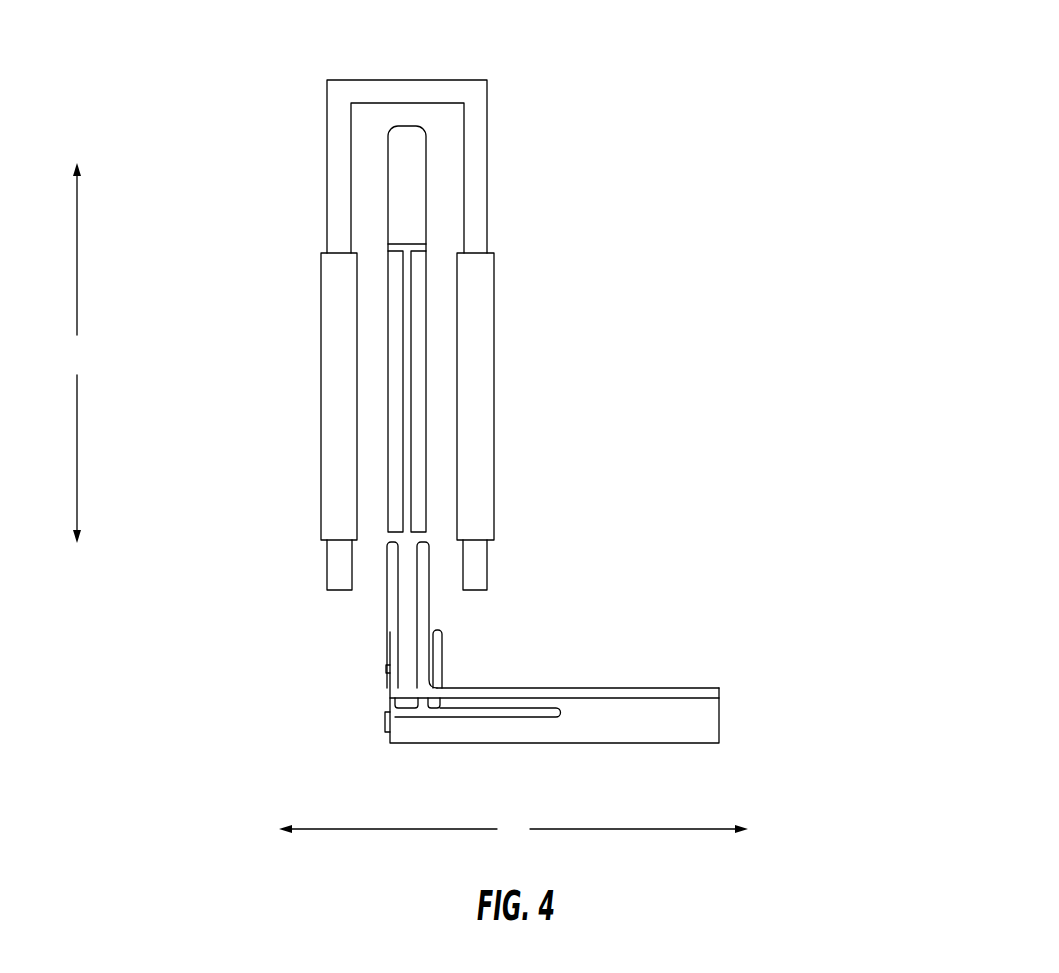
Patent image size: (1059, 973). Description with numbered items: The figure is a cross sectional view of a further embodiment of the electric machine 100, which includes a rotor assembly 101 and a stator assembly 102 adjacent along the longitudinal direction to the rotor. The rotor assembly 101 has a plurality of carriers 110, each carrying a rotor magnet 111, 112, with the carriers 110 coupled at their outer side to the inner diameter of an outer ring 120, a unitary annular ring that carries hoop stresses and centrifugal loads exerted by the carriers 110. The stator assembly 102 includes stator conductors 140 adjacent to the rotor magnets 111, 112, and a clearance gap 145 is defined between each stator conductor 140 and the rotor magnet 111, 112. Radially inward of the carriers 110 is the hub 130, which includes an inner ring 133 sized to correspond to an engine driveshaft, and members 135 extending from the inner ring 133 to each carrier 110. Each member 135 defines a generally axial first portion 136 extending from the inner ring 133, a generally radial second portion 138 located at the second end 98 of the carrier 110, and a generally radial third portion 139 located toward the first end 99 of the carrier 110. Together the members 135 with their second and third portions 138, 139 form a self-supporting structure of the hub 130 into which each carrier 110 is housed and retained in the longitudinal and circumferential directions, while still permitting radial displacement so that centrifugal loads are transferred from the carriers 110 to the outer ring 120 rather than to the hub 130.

The electric machine 100 is at (664, 63).
The rotor assembly 101 is at (520, 635).
The stator assembly 102 is at (486, 59).
The carrier 110 is at (442, 241).
The rotor magnet 111 is at (390, 527).
The rotor magnet 112 is at (420, 520).
The outer ring 120 is at (407, 187).
The hub 130 is at (662, 695).
The inner ring 133 is at (620, 692).
The member 135 is at (506, 669).
The first portion 136 is at (500, 692).
The second portion 138 is at (425, 666).
The third portion 139 is at (384, 677).
The stator conductor 140 is at (494, 323).
The clearance gap 145 is at (372, 405).
The second end 98 is at (691, 400).
The first end 99 is at (184, 405).